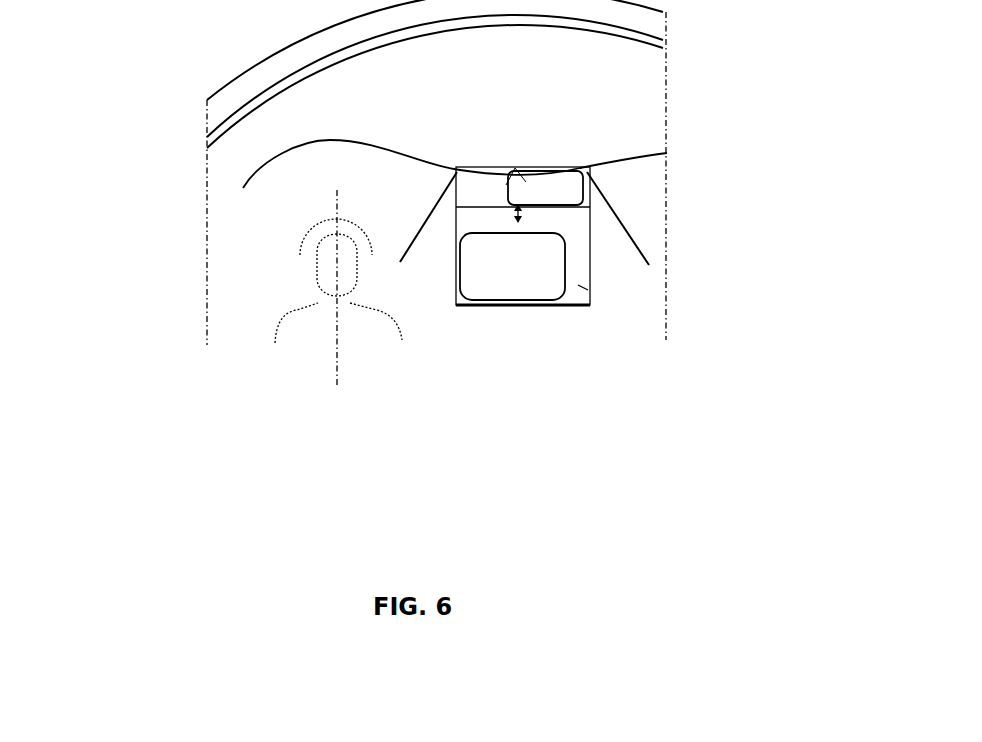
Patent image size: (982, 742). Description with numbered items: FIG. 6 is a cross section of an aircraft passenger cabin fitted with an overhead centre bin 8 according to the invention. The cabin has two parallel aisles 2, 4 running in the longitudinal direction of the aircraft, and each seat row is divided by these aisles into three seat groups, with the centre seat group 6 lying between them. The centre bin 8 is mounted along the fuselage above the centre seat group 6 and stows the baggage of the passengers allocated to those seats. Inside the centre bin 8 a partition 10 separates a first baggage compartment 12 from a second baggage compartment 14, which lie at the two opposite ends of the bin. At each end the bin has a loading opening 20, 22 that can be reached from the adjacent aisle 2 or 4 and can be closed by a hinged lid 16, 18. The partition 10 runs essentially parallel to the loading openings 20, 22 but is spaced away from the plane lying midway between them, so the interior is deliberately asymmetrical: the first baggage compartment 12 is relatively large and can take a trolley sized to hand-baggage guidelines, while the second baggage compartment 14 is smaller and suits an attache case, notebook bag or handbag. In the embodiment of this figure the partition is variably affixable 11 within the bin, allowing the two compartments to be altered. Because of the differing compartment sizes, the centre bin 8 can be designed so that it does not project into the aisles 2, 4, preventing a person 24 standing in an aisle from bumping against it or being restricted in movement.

The aisle 2 is at (268, 492).
The aisle 4 is at (663, 488).
The centre seat group 6 is at (540, 488).
The centre bin 8 is at (520, 158).
The partition 10 is at (594, 212).
The variably affixable partition 11 is at (518, 222).
The first baggage compartment 12 is at (468, 193).
The second baggage compartment 14 is at (588, 290).
The hinged lid 16 is at (400, 255).
The hinged lid 18 is at (592, 205).
The first loading opening 20 is at (432, 273).
The second loading opening 22 is at (600, 192).
The person 24 is at (305, 337).